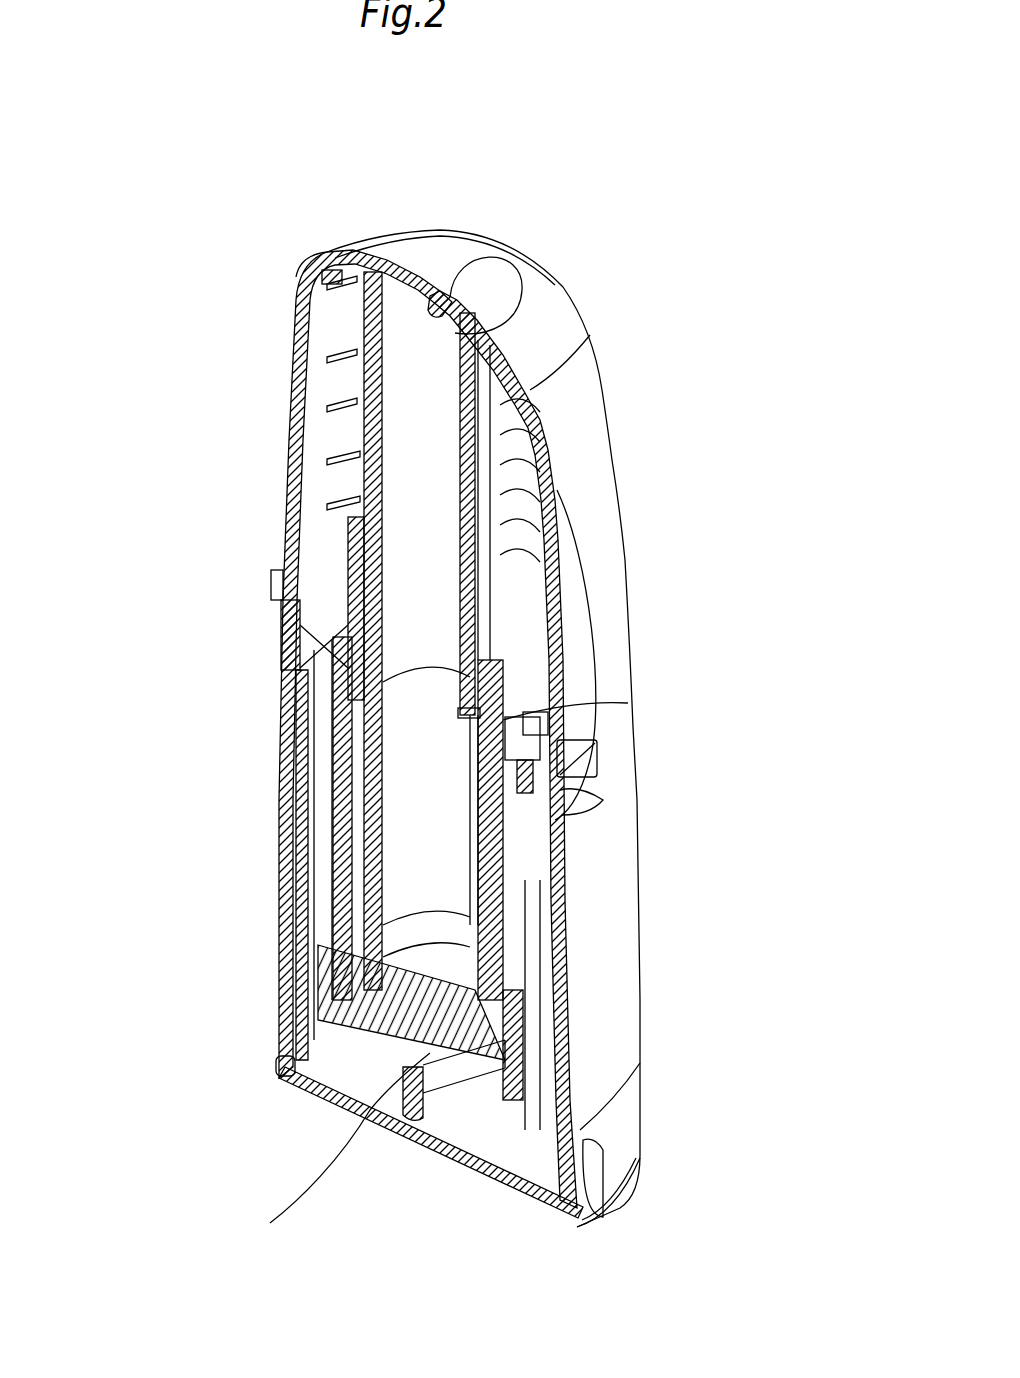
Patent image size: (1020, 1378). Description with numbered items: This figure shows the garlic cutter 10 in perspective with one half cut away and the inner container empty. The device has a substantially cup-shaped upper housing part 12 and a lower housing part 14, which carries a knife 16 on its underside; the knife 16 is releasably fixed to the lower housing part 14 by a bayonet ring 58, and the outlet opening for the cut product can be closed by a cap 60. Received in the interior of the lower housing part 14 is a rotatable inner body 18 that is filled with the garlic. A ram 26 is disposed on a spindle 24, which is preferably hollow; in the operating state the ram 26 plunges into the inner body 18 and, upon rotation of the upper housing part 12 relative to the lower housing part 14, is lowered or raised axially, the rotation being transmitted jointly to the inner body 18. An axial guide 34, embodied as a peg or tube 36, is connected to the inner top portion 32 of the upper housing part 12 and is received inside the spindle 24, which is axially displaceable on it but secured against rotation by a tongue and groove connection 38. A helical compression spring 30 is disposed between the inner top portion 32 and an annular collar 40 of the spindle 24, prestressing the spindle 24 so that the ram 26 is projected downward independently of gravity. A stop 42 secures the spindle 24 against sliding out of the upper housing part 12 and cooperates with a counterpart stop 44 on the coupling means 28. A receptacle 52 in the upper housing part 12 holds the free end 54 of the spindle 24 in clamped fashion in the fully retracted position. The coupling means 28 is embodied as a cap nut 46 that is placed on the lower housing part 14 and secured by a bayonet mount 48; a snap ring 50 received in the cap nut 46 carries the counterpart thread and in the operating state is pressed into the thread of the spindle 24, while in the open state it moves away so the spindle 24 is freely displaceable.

The garlic cutter 10 is at (605, 236).
The upper housing part 12 is at (287, 382).
The lower housing part 14 is at (283, 783).
The knife 16 is at (405, 1090).
The inner body 18 is at (530, 948).
The spindle 24 is at (283, 747).
The ram 26 is at (280, 932).
The coupling means 28 is at (282, 640).
The spring 30 is at (283, 413).
The inner top portion 32 is at (443, 293).
The axial guide 34 is at (285, 437).
The peg or tube 36 is at (475, 432).
The tongue and groove connection 38 is at (287, 533).
The annular collar 40 is at (530, 697).
The stop 42 is at (280, 624).
The counterpart stop 44 is at (550, 725).
The cap nut 46 is at (612, 758).
The bayonet mount 48 is at (568, 800).
The snap ring 50 is at (283, 660).
The receptacle 52 is at (292, 324).
The free end 54 is at (520, 640).
The bayonet ring 58 is at (587, 1163).
The cap 60 is at (430, 1148).